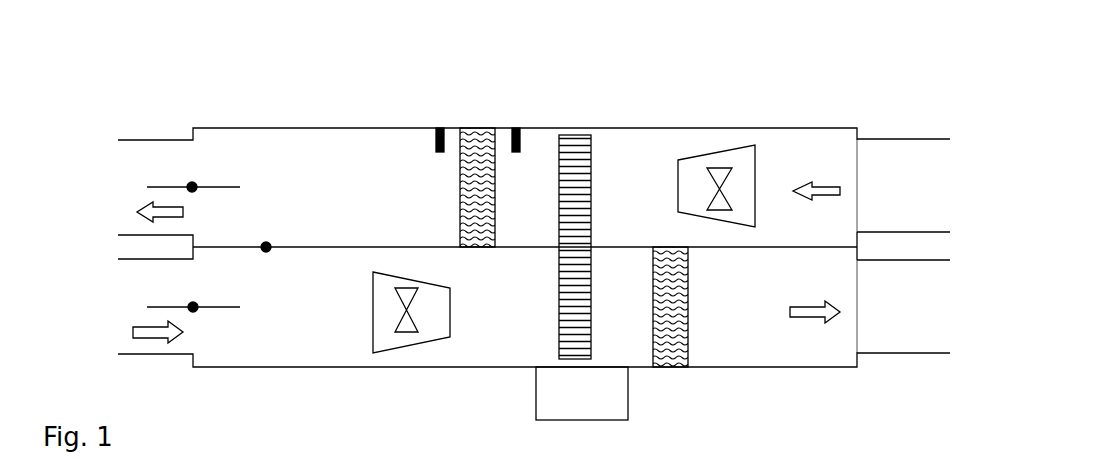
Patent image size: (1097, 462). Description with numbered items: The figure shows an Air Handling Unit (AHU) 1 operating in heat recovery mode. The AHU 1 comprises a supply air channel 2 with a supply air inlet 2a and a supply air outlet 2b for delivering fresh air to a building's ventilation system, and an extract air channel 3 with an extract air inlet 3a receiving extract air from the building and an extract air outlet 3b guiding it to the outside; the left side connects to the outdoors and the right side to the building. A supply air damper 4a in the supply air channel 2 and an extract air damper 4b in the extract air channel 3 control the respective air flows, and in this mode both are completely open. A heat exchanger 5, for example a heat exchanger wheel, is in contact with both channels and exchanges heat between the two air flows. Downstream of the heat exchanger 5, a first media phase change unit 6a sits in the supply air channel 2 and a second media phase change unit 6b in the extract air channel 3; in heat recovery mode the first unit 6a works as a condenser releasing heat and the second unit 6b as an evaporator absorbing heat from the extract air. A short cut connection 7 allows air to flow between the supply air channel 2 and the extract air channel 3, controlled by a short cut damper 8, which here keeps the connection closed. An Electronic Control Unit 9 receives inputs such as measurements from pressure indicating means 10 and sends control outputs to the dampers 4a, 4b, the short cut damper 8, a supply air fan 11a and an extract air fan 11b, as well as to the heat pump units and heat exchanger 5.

The Air Handling Unit (AHU) 1 is at (752, 64).
The supply air channel 2 is at (514, 325).
The supply air inlet 2a is at (163, 293).
The supply air outlet 2b is at (905, 325).
The extract air channel 3 is at (389, 197).
The extract air inlet 3a is at (908, 203).
The extract air outlet 3b is at (163, 179).
The supply air damper 4a is at (196, 307).
The extract air damper 4b is at (194, 187).
The heat exchanger 5 is at (592, 233).
The first media phase change unit 6a is at (688, 333).
The second media phase change unit 6b is at (500, 203).
The short cut connection 7 is at (308, 217).
The short cut damper 8 is at (268, 248).
The Electronic Control Unit (ECU) 9 is at (589, 403).
The pressure indicating means 10 is at (513, 142).
The supply air fan 11a is at (398, 353).
The extract air fan 11b is at (755, 180).